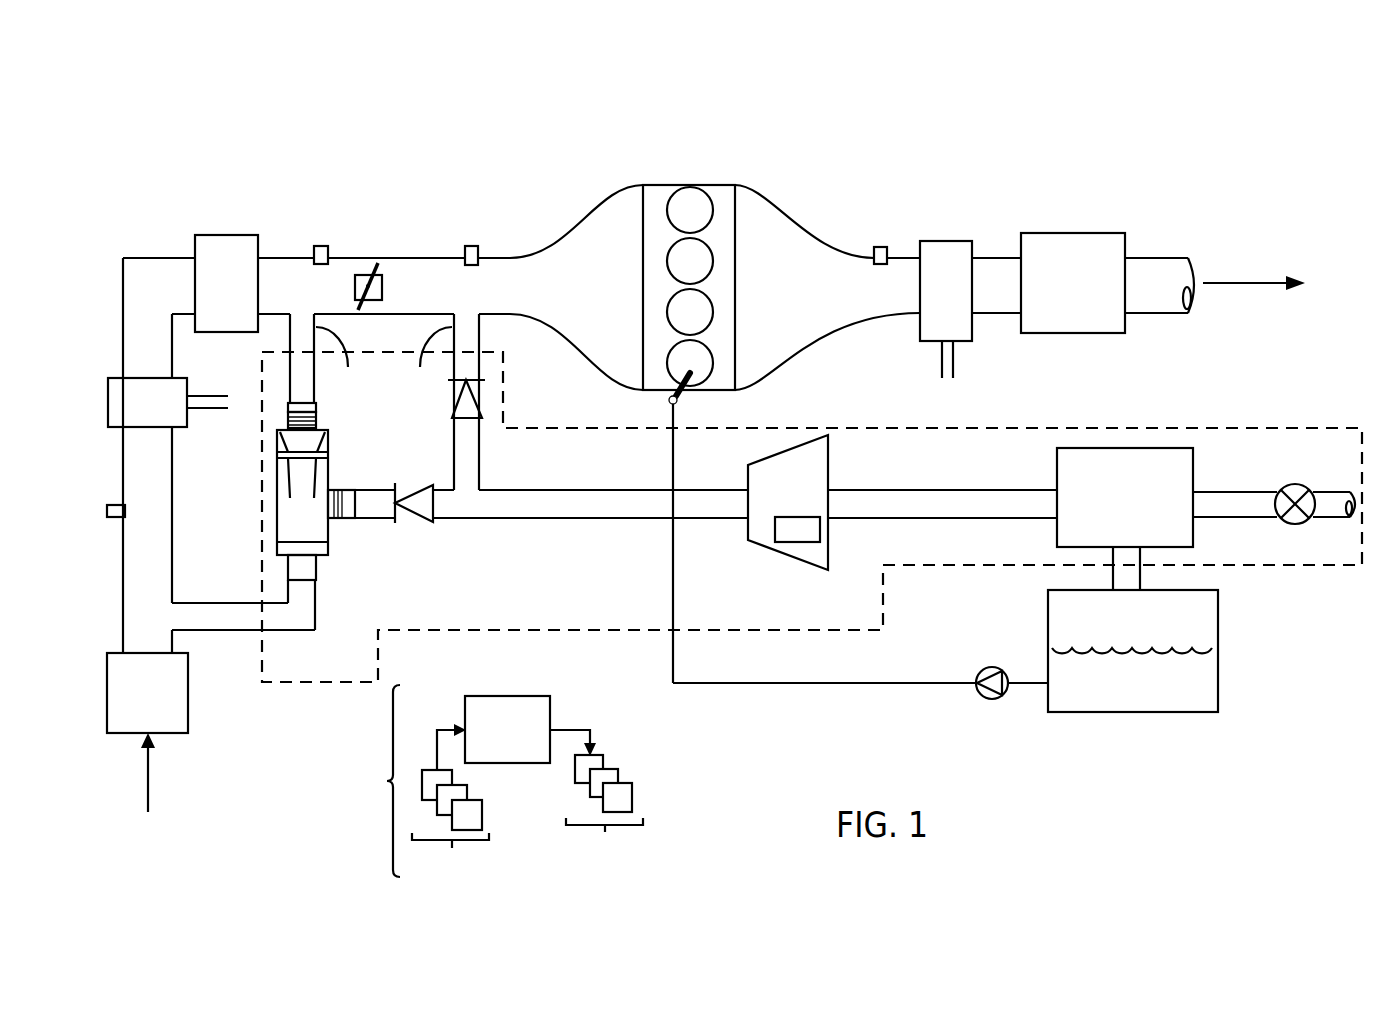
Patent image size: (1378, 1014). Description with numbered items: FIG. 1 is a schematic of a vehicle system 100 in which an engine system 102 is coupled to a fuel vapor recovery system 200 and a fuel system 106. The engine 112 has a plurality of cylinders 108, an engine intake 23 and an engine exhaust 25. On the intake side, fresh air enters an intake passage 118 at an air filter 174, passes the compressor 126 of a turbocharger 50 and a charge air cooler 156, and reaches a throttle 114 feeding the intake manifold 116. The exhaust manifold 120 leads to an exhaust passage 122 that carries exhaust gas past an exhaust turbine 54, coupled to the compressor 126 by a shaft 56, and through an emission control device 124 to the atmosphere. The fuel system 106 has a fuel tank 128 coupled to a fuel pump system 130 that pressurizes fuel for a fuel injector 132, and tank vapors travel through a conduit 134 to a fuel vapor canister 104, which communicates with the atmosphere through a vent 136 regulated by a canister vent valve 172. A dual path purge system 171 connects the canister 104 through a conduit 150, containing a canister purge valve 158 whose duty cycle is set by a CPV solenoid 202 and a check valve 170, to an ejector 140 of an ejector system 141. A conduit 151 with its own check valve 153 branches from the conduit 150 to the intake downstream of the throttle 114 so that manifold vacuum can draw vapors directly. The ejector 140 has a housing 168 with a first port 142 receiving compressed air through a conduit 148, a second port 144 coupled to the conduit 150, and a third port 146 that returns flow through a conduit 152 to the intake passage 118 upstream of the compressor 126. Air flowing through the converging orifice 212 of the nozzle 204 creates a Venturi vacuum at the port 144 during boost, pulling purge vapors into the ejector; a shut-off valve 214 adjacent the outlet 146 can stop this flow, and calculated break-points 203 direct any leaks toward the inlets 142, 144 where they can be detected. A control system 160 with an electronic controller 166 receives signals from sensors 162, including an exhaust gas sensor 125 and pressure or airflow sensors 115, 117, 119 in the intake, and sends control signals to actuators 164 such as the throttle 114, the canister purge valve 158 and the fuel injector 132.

The vehicle system 100 is at (220, 160).
The engine system 102 is at (918, 155).
The fuel vapor canister 104 is at (1193, 472).
The fuel system 106 is at (1146, 760).
The cylinders 108 is at (740, 268).
The engine 112 is at (815, 212).
The throttle 114 is at (382, 290).
The pressure or airflow sensor 115 is at (472, 246).
The intake manifold 116 is at (557, 294).
The pressure or air flow sensor 117 is at (322, 246).
The intake passage 118 is at (138, 294).
The pressure or air flow sensor 119 is at (102, 515).
The exhaust manifold 120 is at (791, 294).
The exhaust passage 122 is at (1145, 258).
The emission control device 124 is at (1062, 233).
The exhaust gas sensor 125 is at (881, 247).
The compressor 126 is at (147, 402).
The fuel tank 128 is at (1218, 692).
The fuel pump system 130 is at (983, 670).
The fuel injector 132 is at (682, 395).
The conduit 134 is at (1142, 572).
The vent 136 is at (1218, 514).
The ejector 140 is at (283, 515).
The ejector system 141 is at (302, 670).
The first port 142 is at (317, 407).
The second port 144 is at (340, 518).
The third port 146 is at (318, 567).
The conduit 148 is at (326, 358).
The conduit 150 is at (581, 514).
The conduit 151 is at (427, 402).
The conduit 152 is at (216, 629).
The check valve 153 is at (460, 408).
The charge air cooler 156 is at (212, 294).
The canister purge valve 158 is at (828, 478).
The control system 160 is at (387, 782).
The sensors 162 is at (450, 821).
The actuators 164 is at (604, 804).
The controller 166 is at (516, 733).
The housing 168 is at (277, 494).
The check valve 170 is at (415, 525).
The dual path purge system 171 is at (588, 550).
The canister vent valve 172 is at (1290, 484).
The air filter 174 is at (134, 704).
The fuel vapor recovery system 200 is at (552, 632).
The CPV solenoid 202 is at (797, 529).
The break-points 203 is at (338, 490).
The nozzle 204 is at (280, 455).
The orifice 212 is at (300, 500).
The shut-off valve 214 is at (330, 548).
The engine intake 23 is at (556, 347).
The engine exhaust 25 is at (808, 360).
The turbocharger 50 is at (983, 362).
The exhaust turbine 54 is at (970, 291).
The shaft 56 is at (953, 360).